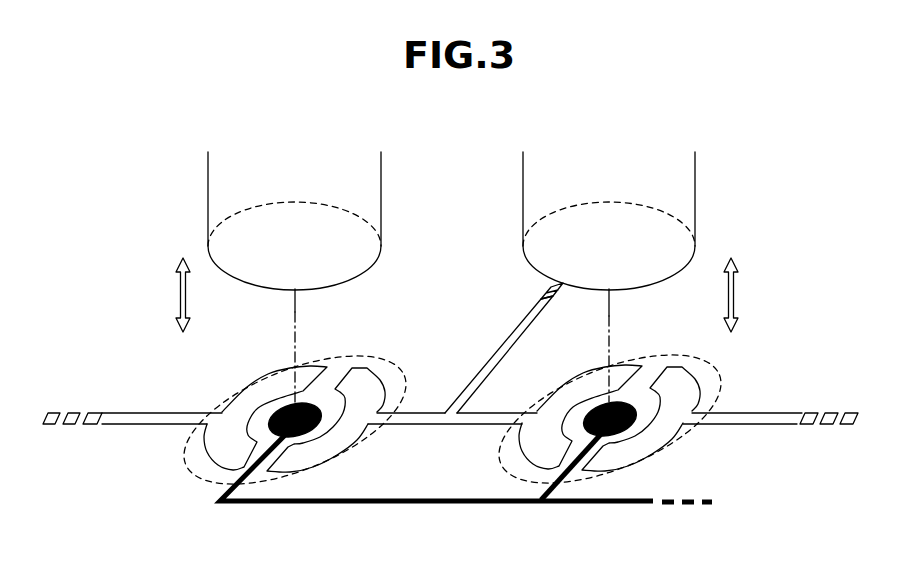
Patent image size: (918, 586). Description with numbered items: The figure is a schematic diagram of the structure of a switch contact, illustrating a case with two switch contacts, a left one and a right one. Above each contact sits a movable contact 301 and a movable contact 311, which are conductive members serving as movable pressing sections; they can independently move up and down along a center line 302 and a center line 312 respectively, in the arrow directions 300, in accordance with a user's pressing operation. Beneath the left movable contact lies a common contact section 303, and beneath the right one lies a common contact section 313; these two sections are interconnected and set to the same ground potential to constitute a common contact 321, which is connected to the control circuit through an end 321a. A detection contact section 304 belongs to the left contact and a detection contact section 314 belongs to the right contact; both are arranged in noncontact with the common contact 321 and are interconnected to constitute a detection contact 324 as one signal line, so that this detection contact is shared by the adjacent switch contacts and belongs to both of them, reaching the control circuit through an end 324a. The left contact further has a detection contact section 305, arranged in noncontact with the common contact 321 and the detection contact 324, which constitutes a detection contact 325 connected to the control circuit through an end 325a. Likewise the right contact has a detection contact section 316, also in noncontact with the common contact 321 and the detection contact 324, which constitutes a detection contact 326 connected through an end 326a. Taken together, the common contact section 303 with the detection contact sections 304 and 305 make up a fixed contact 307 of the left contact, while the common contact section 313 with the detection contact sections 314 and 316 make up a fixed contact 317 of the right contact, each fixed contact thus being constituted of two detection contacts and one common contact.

The arrow directions 300 is at (178, 293).
The movable contact 301 is at (381, 188).
The center line 302 is at (297, 312).
The common contact section 303 is at (284, 407).
The detection contact section 304 is at (347, 433).
The detection contact section 305 is at (233, 408).
The fixed contact 307 is at (388, 346).
The movable contact 311 is at (695, 200).
The center line 312 is at (610, 305).
The common contact section 313 is at (636, 430).
The detection contact section 314 is at (582, 388).
The detection contact section 316 is at (677, 383).
The fixed contact 317 is at (718, 383).
The common contact 321 is at (380, 505).
The end 321a is at (685, 505).
The detection contact 324 is at (510, 338).
The end 324a is at (541, 296).
The detection contact 325 is at (147, 424).
The end 325a is at (62, 424).
The detection contact 326 is at (767, 426).
The end 326a is at (845, 427).